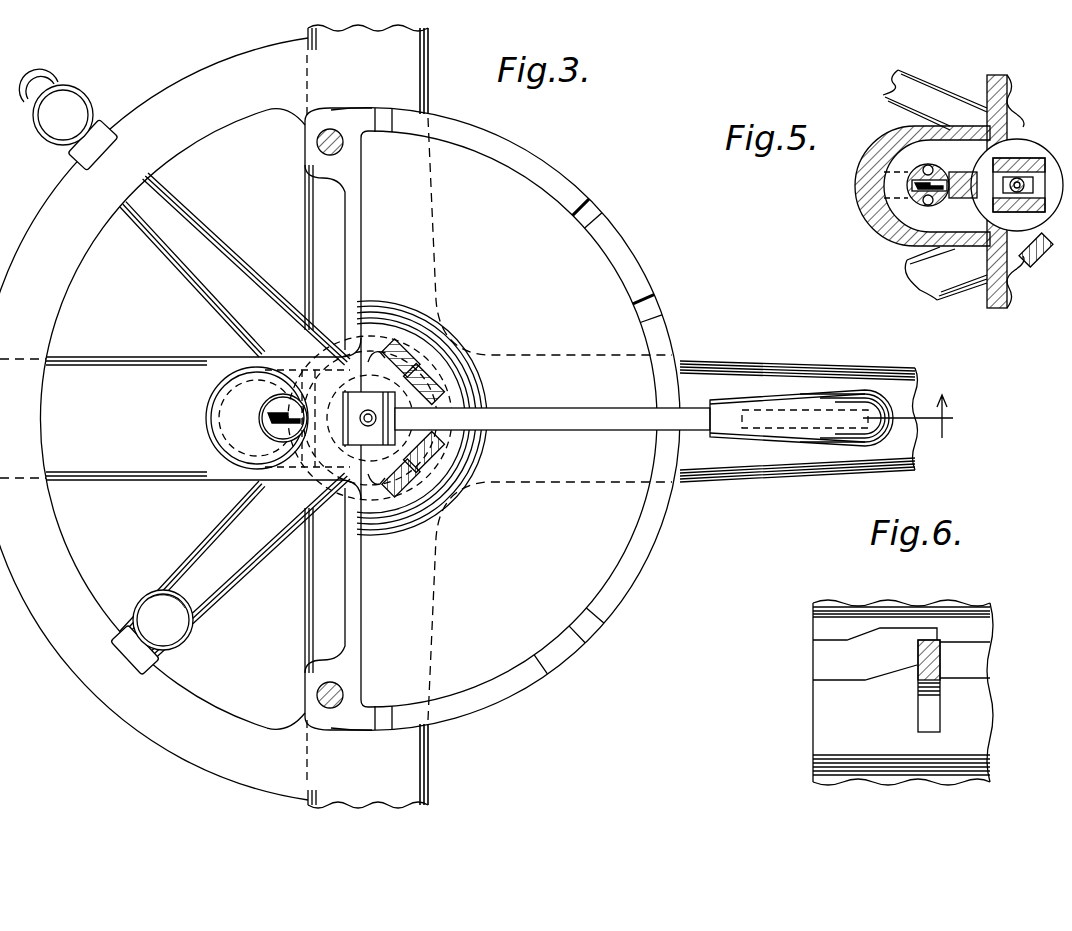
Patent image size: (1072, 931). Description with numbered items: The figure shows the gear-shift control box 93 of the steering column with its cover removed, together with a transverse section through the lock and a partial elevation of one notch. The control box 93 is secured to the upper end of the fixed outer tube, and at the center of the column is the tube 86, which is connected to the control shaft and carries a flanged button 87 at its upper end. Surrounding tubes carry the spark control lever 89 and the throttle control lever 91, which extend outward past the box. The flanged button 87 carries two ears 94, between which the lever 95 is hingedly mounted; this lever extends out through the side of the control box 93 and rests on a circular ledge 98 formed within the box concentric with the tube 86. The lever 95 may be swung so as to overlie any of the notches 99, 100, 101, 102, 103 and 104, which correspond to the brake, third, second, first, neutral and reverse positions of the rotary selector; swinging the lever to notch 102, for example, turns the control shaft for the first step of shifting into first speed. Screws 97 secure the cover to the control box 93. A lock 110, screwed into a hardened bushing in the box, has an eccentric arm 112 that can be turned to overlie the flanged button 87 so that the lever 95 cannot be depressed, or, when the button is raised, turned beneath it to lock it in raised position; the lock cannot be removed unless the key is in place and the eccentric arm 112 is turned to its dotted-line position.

In FIG. 5, the tube 86 is at (1030, 187).
In FIG. 3, the flanged button 87 is at (375, 470).
In FIG. 3, the spark control lever 89 is at (218, 540).
In FIG. 5, the spark control lever 89 is at (915, 270).
In FIG. 3, the throttle control lever 91 is at (187, 243).
In FIG. 5, the throttle control lever 91 is at (920, 93).
In FIG. 3, the control box 93 is at (505, 419).
In FIG. 5, the control box 93 is at (860, 205).
In FIG. 3, the ears 94 is at (462, 392).
In FIG. 5, the ears 94 is at (1056, 142).
In FIG. 3, the lever 95 is at (622, 431).
In FIG. 6, the lever 95 is at (940, 664).
In FIG. 3, the screws 97 is at (317, 142).
In FIG. 3, the circular ledge 98 is at (470, 456).
In FIG. 3, the notch 99 is at (381, 120).
In FIG. 3, the notch 100 is at (592, 207).
In FIG. 3, the notch 101 is at (656, 298).
In FIG. 3, the notch 102 is at (672, 488).
In FIG. 3, the notch 103 is at (600, 630).
In FIG. 6, the notch 103 is at (930, 716).
In FIG. 3, the notch 104 is at (386, 708).
In FIG. 3, the lock 110 is at (233, 417).
In FIG. 5, the eccentric arm 112 is at (950, 176).